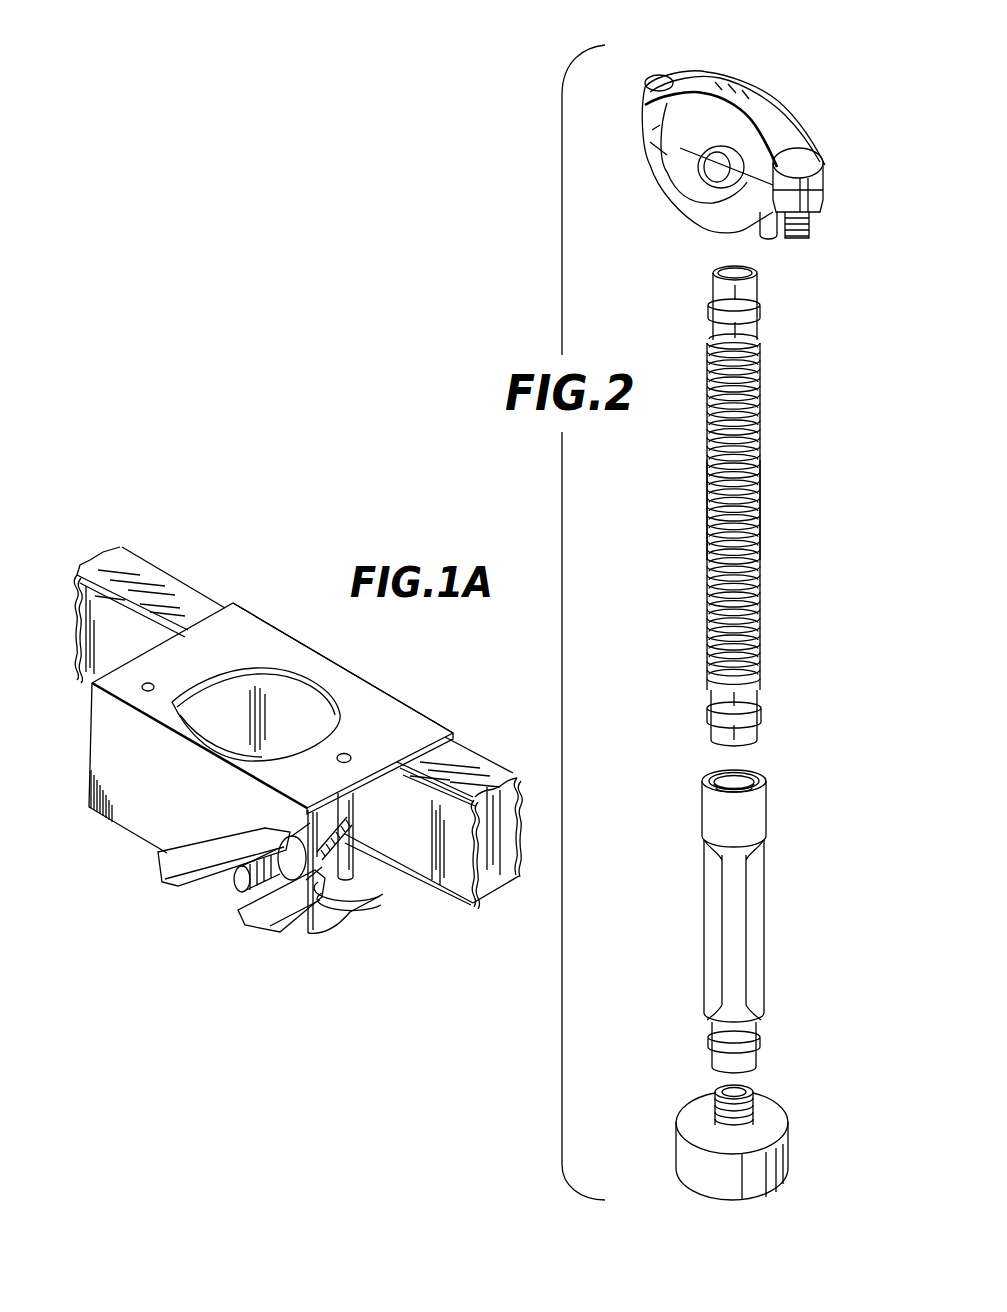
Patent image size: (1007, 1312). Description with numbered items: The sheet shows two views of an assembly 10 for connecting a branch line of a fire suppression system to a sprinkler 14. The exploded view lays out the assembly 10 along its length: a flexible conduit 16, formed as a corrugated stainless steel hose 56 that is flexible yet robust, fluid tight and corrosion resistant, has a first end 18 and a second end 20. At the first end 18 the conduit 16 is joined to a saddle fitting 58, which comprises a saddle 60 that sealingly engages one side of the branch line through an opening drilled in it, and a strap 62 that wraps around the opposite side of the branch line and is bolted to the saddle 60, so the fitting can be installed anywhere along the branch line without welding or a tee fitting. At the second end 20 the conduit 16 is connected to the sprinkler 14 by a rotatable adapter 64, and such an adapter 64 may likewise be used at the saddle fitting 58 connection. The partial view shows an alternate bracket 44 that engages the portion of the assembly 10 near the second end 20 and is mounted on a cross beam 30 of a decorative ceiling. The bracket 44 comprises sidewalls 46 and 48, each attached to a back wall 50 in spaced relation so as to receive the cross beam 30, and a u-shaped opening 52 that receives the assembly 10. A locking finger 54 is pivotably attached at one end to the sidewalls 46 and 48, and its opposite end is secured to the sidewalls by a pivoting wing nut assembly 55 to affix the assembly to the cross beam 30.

In FIG. 2, the assembly 10 is at (818, 538).
In FIG. 2, the sprinkler 14 is at (677, 1150).
In FIG. 2, the flexible conduit 16 is at (774, 512).
In FIG. 2, the first end 18 is at (713, 292).
In FIG. 2, the second end 20 is at (720, 725).
In FIG. 2, the corrugated stainless steel hose 56 is at (760, 487).
In FIG. 2, the saddle fitting 58 is at (723, 129).
In FIG. 2, the saddle 60 is at (663, 182).
In FIG. 2, the strap 62 is at (745, 72).
In FIG. 2, the rotatable adapter 64 is at (780, 258).
In FIG. 1A, the cross beam 30 is at (464, 762).
In FIG. 1A, the bracket 44 is at (400, 866).
In FIG. 1A, the sidewall 46 is at (272, 678).
In FIG. 1A, the sidewall 48 is at (344, 886).
In FIG. 1A, the back wall 50 is at (301, 633).
In FIG. 1A, the u-shaped opening 52 is at (196, 680).
In FIG. 1A, the finger 54 is at (178, 792).
In FIG. 1A, the pivoting wing nut assembly 55 is at (248, 933).